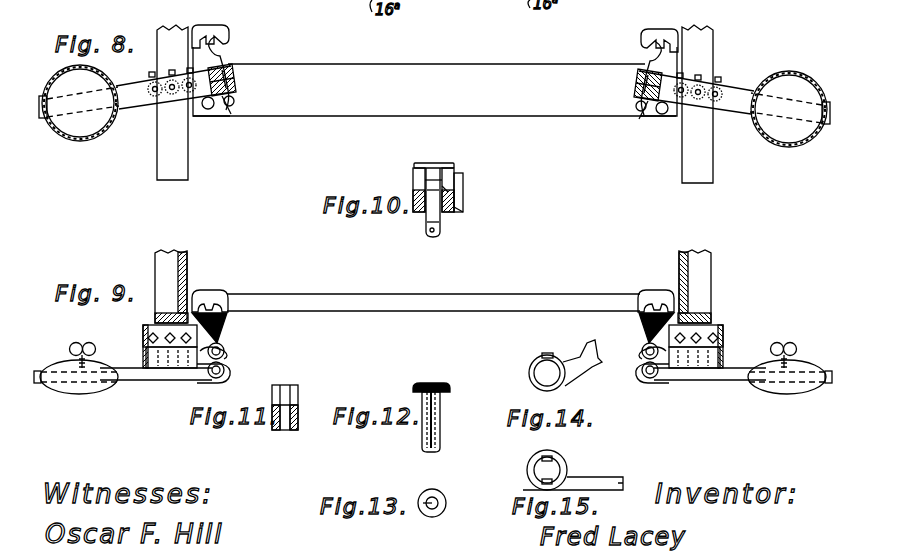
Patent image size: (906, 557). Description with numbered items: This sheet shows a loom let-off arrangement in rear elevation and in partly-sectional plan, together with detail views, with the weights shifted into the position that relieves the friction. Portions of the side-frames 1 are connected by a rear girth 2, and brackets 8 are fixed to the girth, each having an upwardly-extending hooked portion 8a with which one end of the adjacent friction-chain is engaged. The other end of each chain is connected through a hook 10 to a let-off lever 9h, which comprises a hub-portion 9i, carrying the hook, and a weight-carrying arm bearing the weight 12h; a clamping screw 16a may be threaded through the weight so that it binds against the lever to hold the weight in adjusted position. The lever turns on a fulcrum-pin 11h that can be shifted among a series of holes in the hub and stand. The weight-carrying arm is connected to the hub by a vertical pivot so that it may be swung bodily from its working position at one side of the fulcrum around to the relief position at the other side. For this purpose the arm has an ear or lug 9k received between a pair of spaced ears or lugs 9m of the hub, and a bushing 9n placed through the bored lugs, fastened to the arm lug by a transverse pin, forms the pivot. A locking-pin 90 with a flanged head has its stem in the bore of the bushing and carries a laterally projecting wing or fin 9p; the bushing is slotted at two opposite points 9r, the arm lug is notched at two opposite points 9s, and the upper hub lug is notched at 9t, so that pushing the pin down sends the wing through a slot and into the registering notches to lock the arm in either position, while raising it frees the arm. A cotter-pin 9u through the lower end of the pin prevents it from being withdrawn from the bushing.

In FIG. 8, the side-frame 1 is at (155, 162).
In FIG. 9, the side-frame 1 is at (195, 258).
In FIG. 8, the rear girth 2 is at (433, 64).
In FIG. 9, the rear girth 2 is at (465, 299).
In FIG. 9, the bracket 8 is at (225, 326).
In FIG. 8, the hooked portion 8a is at (212, 27).
In FIG. 9, the hooked portion 8a is at (210, 286).
In FIG. 8, the let-off lever 9h is at (128, 105).
In FIG. 10, the let-off lever 9h is at (463, 205).
In FIG. 9, the let-off lever 9h is at (150, 382).
In FIG. 15, the let-off lever 9h is at (602, 477).
In FIG. 9, the hub-portion 9i is at (143, 352).
In FIG. 8, the ear or lug 9k is at (237, 80).
In FIG. 10, the ear or lug 9k is at (413, 192).
In FIG. 15, the ear or lug 9k is at (528, 469).
In FIG. 8, the ears or lugs 9m is at (236, 72).
In FIG. 10, the ears or lugs 9m is at (413, 165).
In FIG. 14, the ears or lugs 9m is at (531, 378).
In FIG. 10, the bushing 9n is at (425, 237).
In FIG. 11, the bushing 9n is at (276, 432).
In FIG. 8, the locking-pin 90 is at (229, 113).
In FIG. 10, the locking-pin 90 is at (432, 174).
In FIG. 9, the locking-pin 90 is at (226, 368).
In FIG. 12, the locking-pin 90 is at (442, 400).
In FIG. 13, the locking-pin 90 is at (440, 492).
In FIG. 10, the wing or fin 9p is at (418, 180).
In FIG. 12, the wing or fin 9p is at (421, 398).
In FIG. 13, the wing or fin 9p is at (422, 513).
In FIG. 11, the slots 9r is at (271, 392).
In FIG. 10, the notches 9s is at (458, 197).
In FIG. 15, the notches 9s is at (555, 459).
In FIG. 14, the notch 9t is at (548, 356).
In FIG. 8, the cotter-pin 9u is at (212, 108).
In FIG. 10, the cotter-pin 9u is at (435, 233).
In FIG. 8, the hook 10 is at (224, 45).
In FIG. 9, the hook 10 is at (230, 348).
In FIG. 9, the fulcrum-pin 11h is at (173, 372).
In FIG. 8, the weight 12h is at (70, 141).
In FIG. 9, the weight 12h is at (80, 395).
In FIG. 9, the clamping screw 16a is at (96, 330).